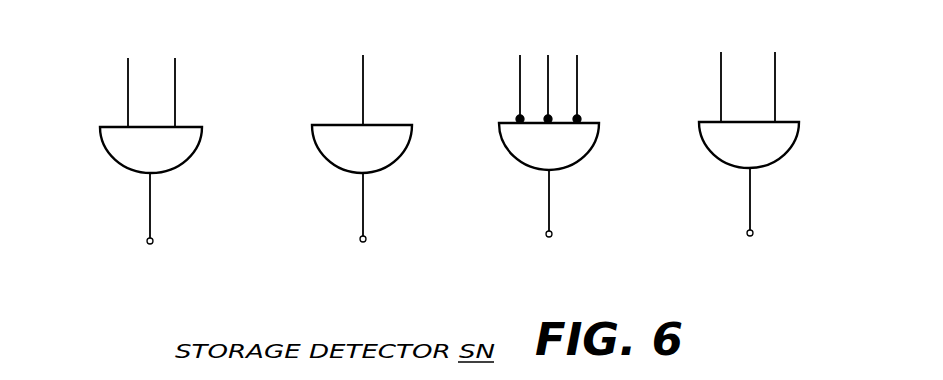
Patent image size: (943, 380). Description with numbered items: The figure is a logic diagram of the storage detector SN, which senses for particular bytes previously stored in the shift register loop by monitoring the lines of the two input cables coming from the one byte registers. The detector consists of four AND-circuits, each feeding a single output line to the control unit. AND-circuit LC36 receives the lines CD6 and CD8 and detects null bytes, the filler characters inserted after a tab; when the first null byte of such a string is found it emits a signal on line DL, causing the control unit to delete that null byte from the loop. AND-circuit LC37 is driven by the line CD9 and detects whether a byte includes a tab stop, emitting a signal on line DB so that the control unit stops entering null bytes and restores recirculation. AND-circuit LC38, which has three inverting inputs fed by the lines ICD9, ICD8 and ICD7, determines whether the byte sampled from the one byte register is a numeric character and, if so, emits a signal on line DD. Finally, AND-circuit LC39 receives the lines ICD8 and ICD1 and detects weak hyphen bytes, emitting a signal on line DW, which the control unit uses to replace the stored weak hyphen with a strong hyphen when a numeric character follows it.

The AND-circuit LC36 is at (182, 158).
The AND-circuit LC37 is at (388, 162).
The AND-circuit LC38 is at (583, 155).
The AND-circuit LC39 is at (780, 152).
The line of cable CD1-8 CD6 is at (128, 85).
The line of cable CD1-8 CD8 is at (175, 85).
The line of cable CD1-9 CD9 is at (363, 95).
The line of cable 1CD1-8 ICD8 is at (548, 67).
The line of cable 1CD1-8 ICD7 is at (577, 67).
The line of cable 1CD1-8 ICD9 is at (520, 77).
The line of cable 1CD1-8 ICD1 is at (775, 83).
The line DL is at (140, 221).
The line DB is at (355, 221).
The line DD is at (544, 217).
The line DW is at (746, 214).